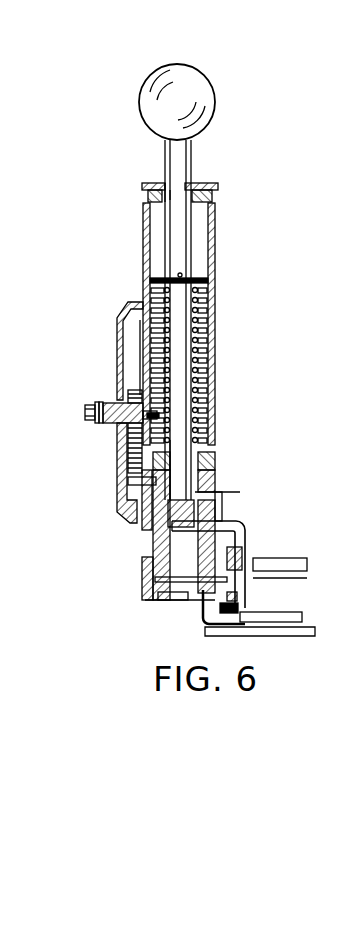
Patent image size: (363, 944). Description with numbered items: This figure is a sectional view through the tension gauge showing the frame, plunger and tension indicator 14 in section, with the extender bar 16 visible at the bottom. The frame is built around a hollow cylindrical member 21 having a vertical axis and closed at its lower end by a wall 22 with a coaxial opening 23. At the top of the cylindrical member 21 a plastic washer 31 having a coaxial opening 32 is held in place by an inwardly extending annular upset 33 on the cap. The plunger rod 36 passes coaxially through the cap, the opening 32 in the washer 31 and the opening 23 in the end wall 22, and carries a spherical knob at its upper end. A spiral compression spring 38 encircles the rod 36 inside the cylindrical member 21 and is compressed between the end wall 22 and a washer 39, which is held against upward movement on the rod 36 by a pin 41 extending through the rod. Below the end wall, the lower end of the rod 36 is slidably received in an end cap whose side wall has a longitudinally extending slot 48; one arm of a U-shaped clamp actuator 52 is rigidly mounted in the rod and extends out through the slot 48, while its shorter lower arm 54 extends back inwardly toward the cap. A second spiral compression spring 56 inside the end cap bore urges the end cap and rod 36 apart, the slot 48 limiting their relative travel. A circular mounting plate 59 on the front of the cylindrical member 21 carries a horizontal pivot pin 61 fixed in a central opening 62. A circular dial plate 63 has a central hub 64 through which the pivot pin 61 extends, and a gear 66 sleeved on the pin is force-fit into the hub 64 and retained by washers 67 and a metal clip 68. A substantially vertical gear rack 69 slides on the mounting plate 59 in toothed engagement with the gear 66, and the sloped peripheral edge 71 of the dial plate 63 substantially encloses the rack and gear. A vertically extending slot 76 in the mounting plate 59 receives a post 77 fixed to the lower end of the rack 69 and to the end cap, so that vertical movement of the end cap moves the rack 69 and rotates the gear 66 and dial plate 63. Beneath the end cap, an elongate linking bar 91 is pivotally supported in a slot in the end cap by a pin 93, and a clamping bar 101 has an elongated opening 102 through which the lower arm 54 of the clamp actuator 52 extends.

The tension indicator 14 is at (115, 362).
The extender bar 16 is at (150, 597).
The hollow cylindrical member 21 is at (215, 231).
The wall 22 is at (203, 420).
The opening 23 is at (200, 442).
The plastic washer 31 is at (147, 196).
The coaxial opening 32 is at (170, 192).
The annular upset 33 is at (198, 183).
The rod 36 is at (172, 150).
The spiral compression spring 38 is at (217, 303).
The washer 39 is at (214, 278).
The pin 41 is at (178, 273).
The longitudinally extending slot 48 is at (220, 502).
The U-shaped clamp actuator 52 is at (246, 545).
The lower arm 54 is at (243, 607).
The spiral compression spring 56 is at (150, 555).
The circular mounting plate 59 is at (123, 323).
The horizontal pivot pin 61 is at (113, 430).
The opening 62 is at (200, 457).
The circular dial plate 63 is at (116, 352).
The central hub 64 is at (118, 406).
The gear 66 is at (126, 428).
The washers 67 is at (86, 407).
The metal clip 68 is at (99, 424).
The gear rack 69 is at (145, 470).
The peripheral edge 71 is at (125, 528).
The vertically extending slot 76 is at (138, 458).
The post 77 is at (145, 490).
The linking bar 91 is at (187, 596).
The pin 93 is at (222, 572).
The clamping bar 101 is at (227, 628).
The elongated opening 102 is at (207, 615).